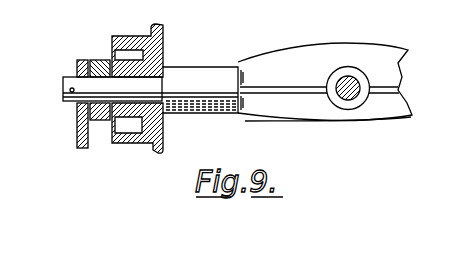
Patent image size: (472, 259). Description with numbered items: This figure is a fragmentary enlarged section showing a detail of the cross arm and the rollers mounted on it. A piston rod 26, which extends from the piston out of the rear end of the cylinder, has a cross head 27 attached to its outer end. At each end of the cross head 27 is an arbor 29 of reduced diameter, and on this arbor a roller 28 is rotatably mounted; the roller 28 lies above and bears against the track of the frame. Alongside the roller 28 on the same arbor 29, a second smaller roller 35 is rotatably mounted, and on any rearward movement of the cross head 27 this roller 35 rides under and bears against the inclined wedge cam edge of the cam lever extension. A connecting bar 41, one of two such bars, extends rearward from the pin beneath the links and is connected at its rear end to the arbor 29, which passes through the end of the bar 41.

The piston rod 26 is at (349, 75).
The cross head 27 is at (283, 63).
The roller 28 is at (144, 135).
The arbor 29 is at (81, 87).
The second smaller roller 35 is at (99, 118).
The connecting bar 41 is at (77, 145).